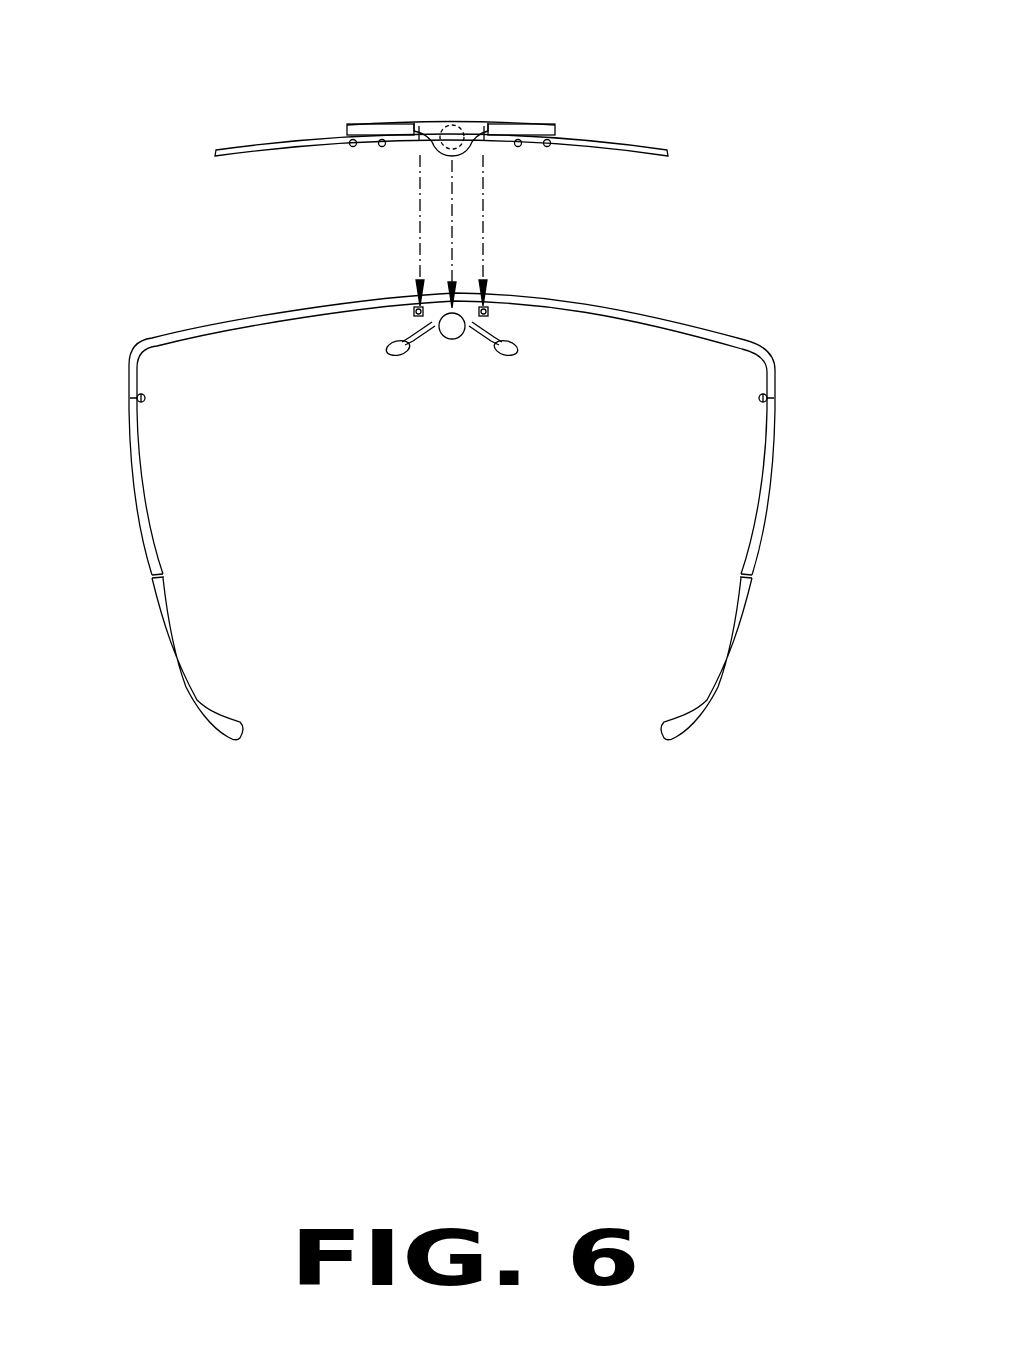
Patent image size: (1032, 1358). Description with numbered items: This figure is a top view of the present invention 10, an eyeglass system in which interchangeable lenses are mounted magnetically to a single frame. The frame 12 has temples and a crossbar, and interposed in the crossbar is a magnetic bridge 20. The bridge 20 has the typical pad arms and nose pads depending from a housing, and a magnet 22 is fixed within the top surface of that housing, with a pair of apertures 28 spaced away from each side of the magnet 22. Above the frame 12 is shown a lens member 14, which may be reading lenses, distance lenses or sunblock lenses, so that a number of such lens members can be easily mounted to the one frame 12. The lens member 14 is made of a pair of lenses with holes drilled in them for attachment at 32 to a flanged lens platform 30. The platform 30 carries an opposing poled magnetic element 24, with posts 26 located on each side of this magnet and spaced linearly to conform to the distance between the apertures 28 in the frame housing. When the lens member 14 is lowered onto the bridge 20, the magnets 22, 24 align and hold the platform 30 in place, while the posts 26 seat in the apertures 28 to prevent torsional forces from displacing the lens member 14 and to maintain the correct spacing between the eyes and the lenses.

The present invention 10 is at (483, 450).
The frame 12 is at (233, 325).
The lens member 14 is at (205, 131).
The magnetic bridge 20 is at (452, 340).
The magnet 22 is at (455, 328).
The opposing poled magnetic element 24 is at (447, 130).
The posts 26 is at (420, 130).
The apertures 28 is at (412, 298).
The flanged lens platform 30 is at (465, 120).
The attachment 32 is at (520, 140).